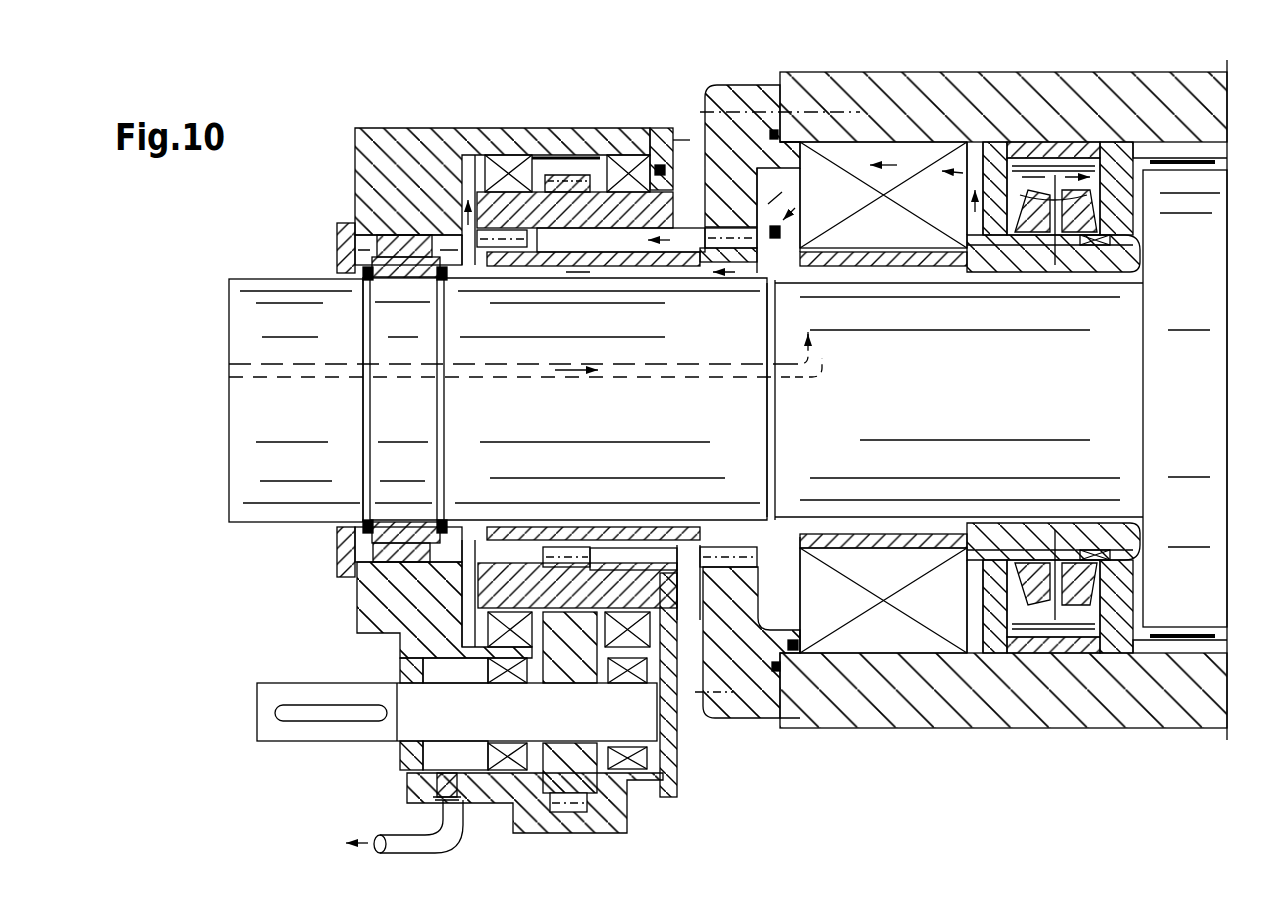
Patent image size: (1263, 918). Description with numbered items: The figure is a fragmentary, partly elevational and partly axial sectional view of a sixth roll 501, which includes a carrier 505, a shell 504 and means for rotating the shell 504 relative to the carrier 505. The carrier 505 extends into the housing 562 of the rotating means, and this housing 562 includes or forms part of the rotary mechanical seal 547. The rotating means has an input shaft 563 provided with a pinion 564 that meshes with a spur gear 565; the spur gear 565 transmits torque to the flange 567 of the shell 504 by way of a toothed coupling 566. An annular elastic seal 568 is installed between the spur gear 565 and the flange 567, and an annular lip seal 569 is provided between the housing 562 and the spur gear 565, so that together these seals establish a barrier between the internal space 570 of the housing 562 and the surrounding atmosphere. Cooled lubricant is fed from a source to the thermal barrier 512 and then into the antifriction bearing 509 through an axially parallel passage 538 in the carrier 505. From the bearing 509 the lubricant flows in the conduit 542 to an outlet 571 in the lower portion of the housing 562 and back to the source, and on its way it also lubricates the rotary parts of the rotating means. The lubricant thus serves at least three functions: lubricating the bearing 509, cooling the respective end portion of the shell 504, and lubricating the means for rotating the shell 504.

The roll 501 is at (945, 747).
The shell 504 is at (1035, 98).
The carrier 505 is at (1000, 397).
The antifriction bearing 509 is at (893, 150).
The thermal barrier 512 is at (1105, 135).
The axially parallel passage 538 is at (258, 373).
The conduit 542 is at (767, 183).
The rotary mechanical seal 547 is at (491, 118).
The housing 562 is at (380, 160).
The input shaft 563 is at (272, 698).
The pinion 564 is at (577, 775).
The spur gear 565 is at (487, 588).
The toothed coupling 566 is at (565, 255).
The flange 567 is at (720, 128).
The annular elastic seal 568 is at (702, 620).
The annular lip seal 569 is at (655, 172).
The internal space 570 is at (449, 232).
The outlet 571 is at (396, 832).